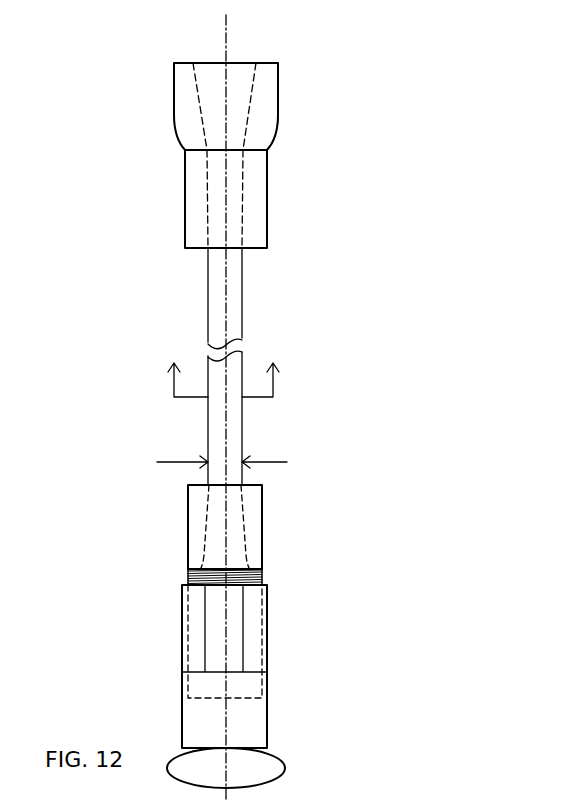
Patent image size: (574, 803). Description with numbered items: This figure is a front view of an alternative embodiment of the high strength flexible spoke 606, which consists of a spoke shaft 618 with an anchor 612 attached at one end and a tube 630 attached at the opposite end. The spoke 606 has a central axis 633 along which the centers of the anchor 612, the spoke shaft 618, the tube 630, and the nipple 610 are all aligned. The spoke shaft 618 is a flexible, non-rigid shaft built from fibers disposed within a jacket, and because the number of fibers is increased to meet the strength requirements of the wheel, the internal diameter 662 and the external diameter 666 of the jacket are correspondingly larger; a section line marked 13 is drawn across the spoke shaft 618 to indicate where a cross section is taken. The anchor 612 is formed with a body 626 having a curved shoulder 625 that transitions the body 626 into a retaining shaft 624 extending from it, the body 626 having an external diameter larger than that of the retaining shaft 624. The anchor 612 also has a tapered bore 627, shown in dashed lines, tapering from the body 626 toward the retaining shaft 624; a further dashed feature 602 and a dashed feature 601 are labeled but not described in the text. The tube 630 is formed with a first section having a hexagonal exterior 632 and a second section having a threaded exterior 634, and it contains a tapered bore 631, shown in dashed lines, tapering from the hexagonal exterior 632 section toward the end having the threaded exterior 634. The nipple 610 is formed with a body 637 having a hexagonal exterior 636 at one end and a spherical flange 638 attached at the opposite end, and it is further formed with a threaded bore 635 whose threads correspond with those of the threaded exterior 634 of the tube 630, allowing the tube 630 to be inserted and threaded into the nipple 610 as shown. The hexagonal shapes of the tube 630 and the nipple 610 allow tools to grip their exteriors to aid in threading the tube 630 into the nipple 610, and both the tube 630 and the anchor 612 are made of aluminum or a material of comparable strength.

The spoke 606 is at (261, 149).
The anchor 612 is at (187, 198).
The central axis 633 is at (226, 52).
The body 626 is at (275, 89).
The inner lumen 602 is at (233, 111).
The curved shoulder 625 is at (275, 142).
The tapered bore 627 is at (242, 185).
The retaining shaft 624 is at (273, 199).
The spoke shaft 618 is at (243, 305).
The section line 13- 13 is at (228, 367).
The external diameter 666 is at (172, 462).
The tapered bore 631 is at (265, 487).
The tube 630 is at (271, 527).
The hexagonal exterior 632 is at (263, 525).
The internal channel 601 is at (187, 565).
The threaded exterior 634 is at (263, 577).
The threaded bore 635 is at (183, 617).
The hexagonal exterior 636 is at (234, 666).
The nipple 610 is at (180, 685).
The body 637 is at (267, 700).
The spherical flange 638 is at (283, 762).
The internal diameter 662 is at (526, 787).